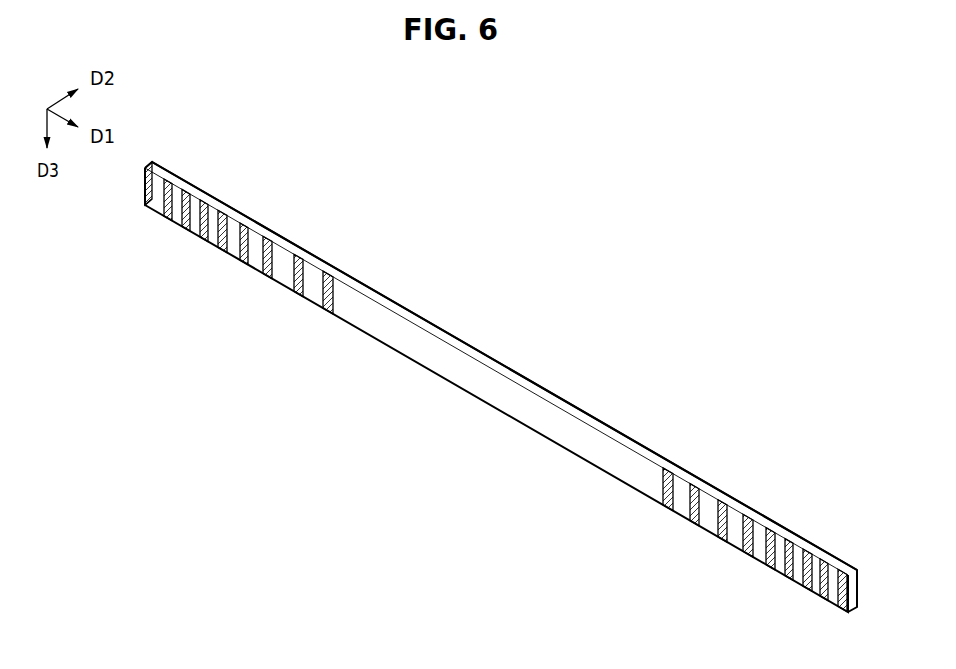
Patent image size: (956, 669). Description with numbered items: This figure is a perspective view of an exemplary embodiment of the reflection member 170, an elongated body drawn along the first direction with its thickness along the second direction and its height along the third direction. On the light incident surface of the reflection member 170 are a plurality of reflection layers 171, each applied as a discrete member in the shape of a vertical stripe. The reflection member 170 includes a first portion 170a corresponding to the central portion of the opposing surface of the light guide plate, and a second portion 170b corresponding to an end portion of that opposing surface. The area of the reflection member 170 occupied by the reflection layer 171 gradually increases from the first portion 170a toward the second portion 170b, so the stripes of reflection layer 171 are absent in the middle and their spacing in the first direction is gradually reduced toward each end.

The reflection member 170 is at (504, 364).
The first portion 170a is at (516, 361).
The second portion 170b is at (199, 175).
The reflection layer 171 is at (323, 299).